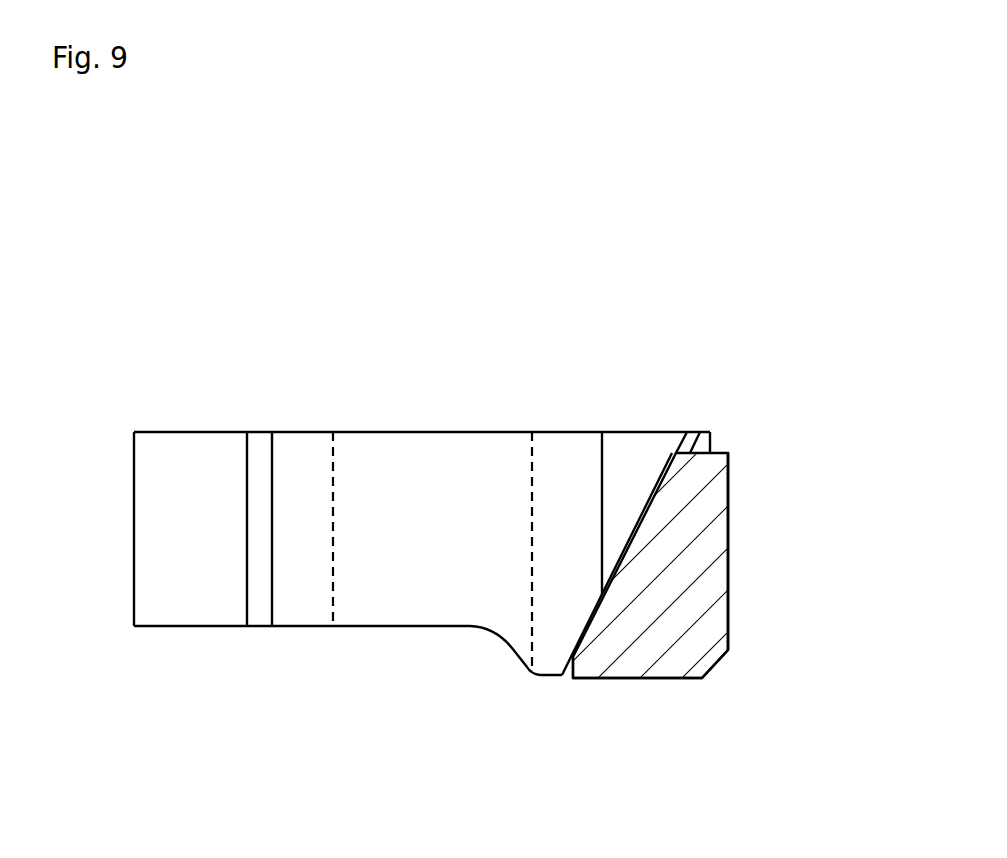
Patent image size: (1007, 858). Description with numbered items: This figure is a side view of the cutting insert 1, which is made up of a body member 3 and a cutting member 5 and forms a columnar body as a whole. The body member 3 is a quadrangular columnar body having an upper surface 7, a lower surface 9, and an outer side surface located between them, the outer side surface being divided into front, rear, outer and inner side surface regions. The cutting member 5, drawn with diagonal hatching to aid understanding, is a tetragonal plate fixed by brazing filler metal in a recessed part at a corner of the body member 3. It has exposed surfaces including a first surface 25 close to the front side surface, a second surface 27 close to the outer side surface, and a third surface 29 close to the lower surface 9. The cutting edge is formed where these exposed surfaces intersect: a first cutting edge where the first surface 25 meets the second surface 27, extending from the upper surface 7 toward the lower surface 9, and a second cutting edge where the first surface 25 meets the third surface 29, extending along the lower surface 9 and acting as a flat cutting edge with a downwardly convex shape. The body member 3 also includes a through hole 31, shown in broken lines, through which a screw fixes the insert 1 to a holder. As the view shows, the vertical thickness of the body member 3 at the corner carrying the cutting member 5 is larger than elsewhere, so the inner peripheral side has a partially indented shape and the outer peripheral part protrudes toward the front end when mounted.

The insert 1 is at (310, 345).
The body member 3 is at (227, 498).
The cutting member 5 is at (697, 510).
The upper surface 7 is at (488, 432).
The lower surface 9 is at (307, 628).
The first surface 25 is at (702, 645).
The second surface 27 is at (728, 517).
The third surface 29 is at (597, 678).
The through hole 31 is at (333, 510).